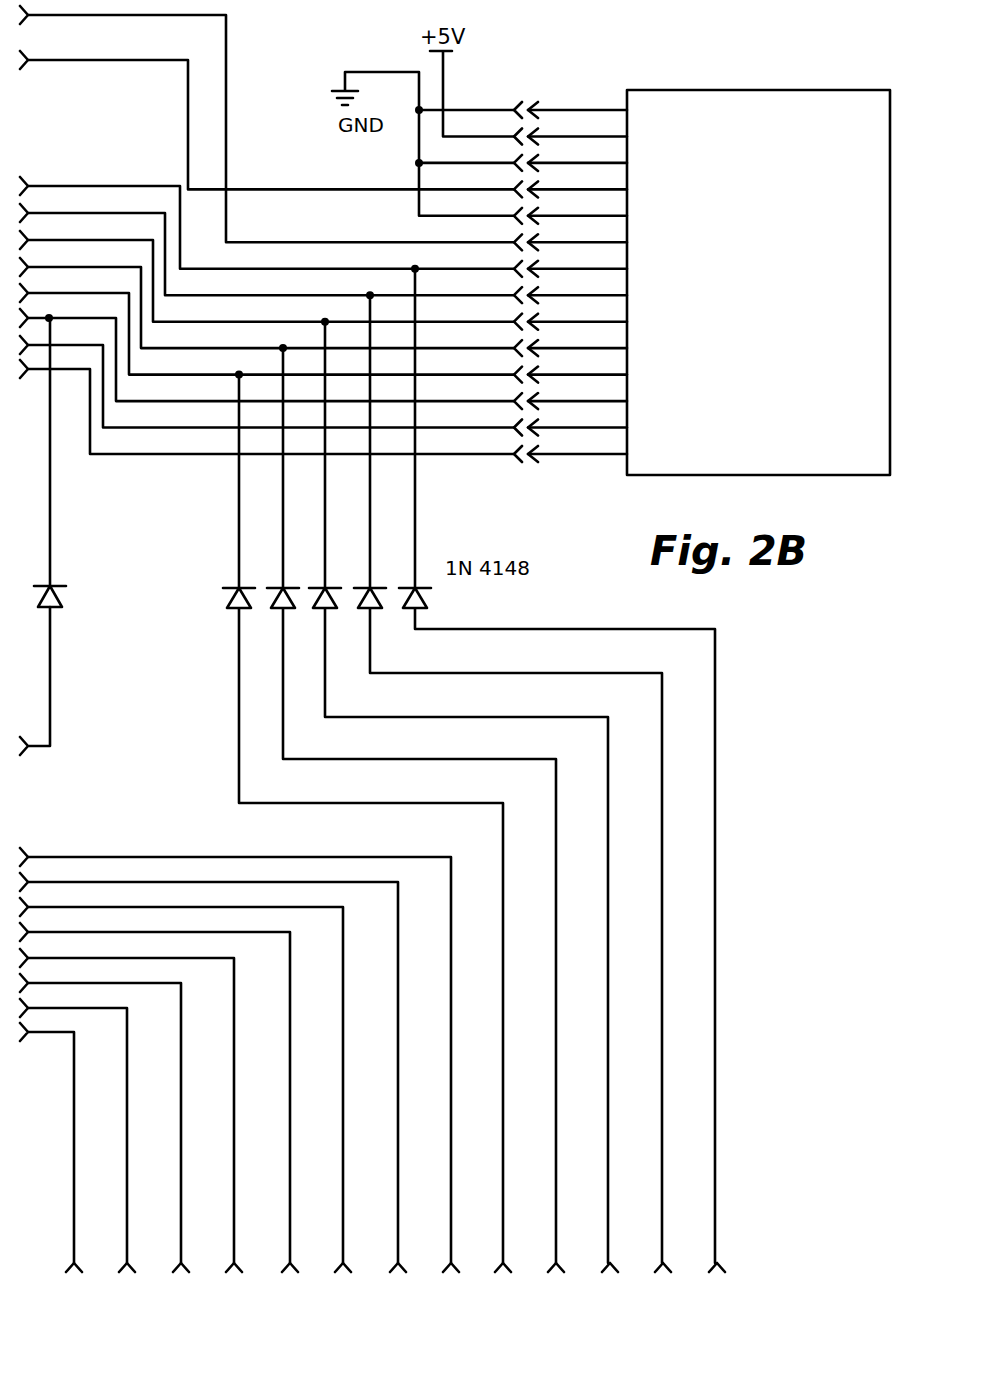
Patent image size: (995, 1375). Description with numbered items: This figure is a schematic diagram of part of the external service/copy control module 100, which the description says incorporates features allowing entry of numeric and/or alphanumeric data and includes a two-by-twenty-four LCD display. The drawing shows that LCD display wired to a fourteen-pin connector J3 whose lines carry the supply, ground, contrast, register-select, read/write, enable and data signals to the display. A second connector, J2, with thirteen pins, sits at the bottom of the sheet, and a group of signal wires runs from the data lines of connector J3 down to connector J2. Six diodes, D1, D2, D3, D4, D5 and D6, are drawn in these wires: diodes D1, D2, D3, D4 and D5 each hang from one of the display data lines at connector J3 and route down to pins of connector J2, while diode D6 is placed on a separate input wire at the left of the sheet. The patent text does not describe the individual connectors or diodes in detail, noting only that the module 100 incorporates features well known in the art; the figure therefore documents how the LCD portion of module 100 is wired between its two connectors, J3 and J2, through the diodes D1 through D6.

The external service/copy control module 100 is at (712, 69).
The LCD connector J3 is at (545, 265).
The connector J2 is at (416, 1255).
The diode D1 is at (557, 764).
The diode D2 is at (508, 777).
The diode D3 is at (458, 790).
The diode D4 is at (411, 803).
The diode D5 is at (363, 817).
The diode D6 is at (52, 534).